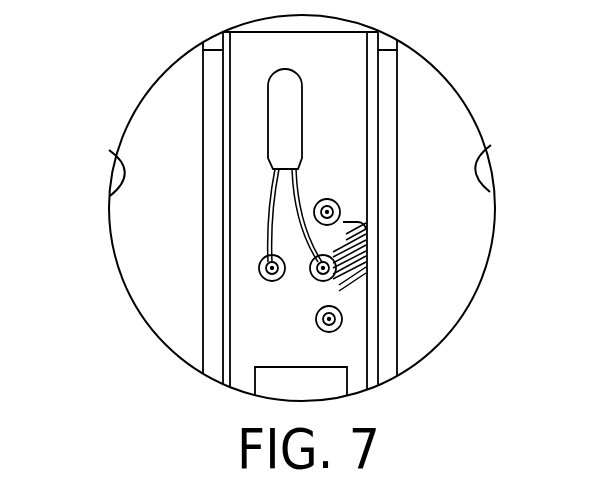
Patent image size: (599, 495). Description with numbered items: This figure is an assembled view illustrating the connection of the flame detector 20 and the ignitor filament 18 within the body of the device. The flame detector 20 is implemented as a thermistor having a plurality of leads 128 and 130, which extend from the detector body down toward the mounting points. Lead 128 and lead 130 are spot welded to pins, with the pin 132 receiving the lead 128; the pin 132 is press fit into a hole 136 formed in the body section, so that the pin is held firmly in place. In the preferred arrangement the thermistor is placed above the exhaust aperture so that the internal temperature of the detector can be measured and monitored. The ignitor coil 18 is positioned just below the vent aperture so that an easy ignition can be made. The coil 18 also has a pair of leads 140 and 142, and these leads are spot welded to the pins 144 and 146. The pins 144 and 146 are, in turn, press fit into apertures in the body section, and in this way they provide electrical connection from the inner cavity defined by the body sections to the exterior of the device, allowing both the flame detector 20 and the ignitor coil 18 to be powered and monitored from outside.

The ignitor filament 18 is at (345, 289).
The flame detector 20 is at (282, 87).
The lead 128 is at (273, 237).
The lead 130 is at (305, 235).
The pin 132 is at (271, 268).
The hole 136 is at (268, 281).
The lead 140 is at (344, 221).
The lead 142 is at (342, 314).
The pin 144 is at (327, 212).
The pin 146 is at (329, 319).